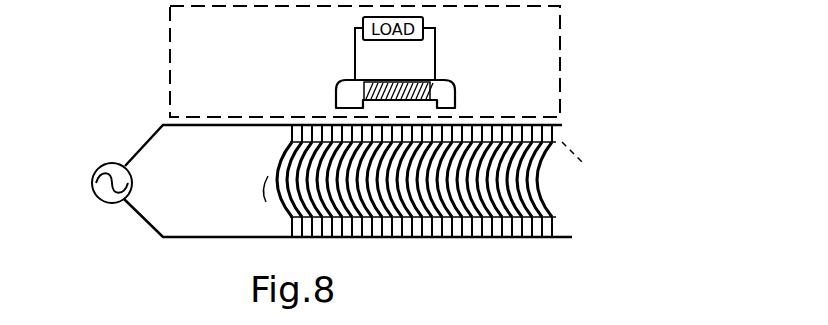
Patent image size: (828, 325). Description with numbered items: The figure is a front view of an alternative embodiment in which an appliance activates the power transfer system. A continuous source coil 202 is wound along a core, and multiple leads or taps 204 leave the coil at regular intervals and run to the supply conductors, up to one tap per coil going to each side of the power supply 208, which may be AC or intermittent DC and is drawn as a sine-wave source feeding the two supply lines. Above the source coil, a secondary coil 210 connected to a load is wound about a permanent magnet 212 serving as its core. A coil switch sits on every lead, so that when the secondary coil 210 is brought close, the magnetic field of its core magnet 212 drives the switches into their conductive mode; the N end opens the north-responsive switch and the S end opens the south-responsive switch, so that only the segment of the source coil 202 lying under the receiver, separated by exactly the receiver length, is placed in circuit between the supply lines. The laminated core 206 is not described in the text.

The continuous source coil 202 is at (506, 212).
The leads or taps 204 is at (237, 238).
The laminated core 206 is at (362, 238).
The power supply 208 is at (107, 163).
The secondary coil 210 is at (410, 80).
The permanent magnet 212 is at (448, 85).